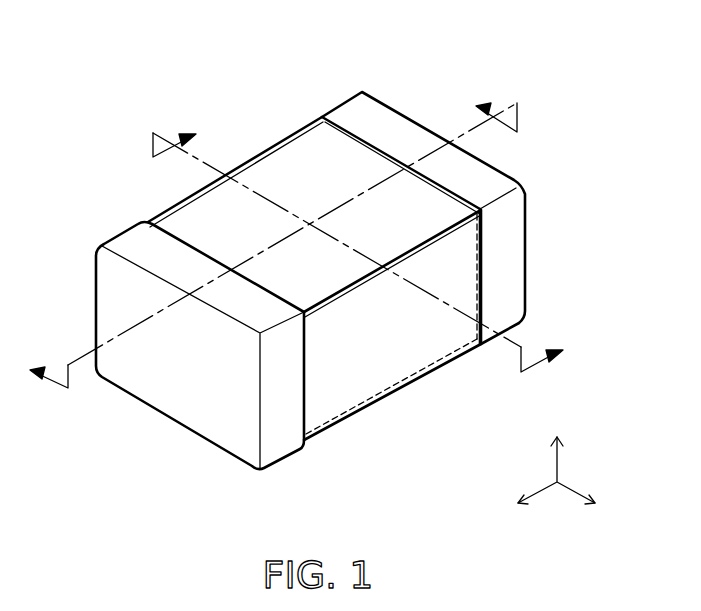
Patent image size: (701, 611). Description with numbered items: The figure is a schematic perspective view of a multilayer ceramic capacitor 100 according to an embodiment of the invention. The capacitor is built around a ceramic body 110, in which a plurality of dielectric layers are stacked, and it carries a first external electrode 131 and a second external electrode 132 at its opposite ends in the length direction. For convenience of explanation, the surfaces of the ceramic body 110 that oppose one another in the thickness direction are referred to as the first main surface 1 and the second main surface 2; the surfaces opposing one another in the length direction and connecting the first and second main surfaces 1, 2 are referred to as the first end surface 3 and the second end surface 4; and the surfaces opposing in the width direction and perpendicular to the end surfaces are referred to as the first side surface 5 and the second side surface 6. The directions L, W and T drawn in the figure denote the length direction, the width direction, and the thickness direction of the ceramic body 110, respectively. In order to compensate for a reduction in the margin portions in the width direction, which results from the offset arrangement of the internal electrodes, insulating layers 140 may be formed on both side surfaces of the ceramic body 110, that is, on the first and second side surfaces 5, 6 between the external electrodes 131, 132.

The multilayer ceramic capacitor 100 is at (110, 27).
The ceramic body 110 is at (355, 260).
The first external electrode 131 is at (214, 366).
The second external electrode 132 is at (476, 218).
The insulating layer 140 is at (240, 172).
The first main surface 1 is at (375, 385).
The second main surface 2 is at (183, 220).
The first end surface 3 is at (173, 407).
The second end surface 4 is at (490, 175).
The first side surface 5 is at (460, 262).
The second side surface 6 is at (318, 142).